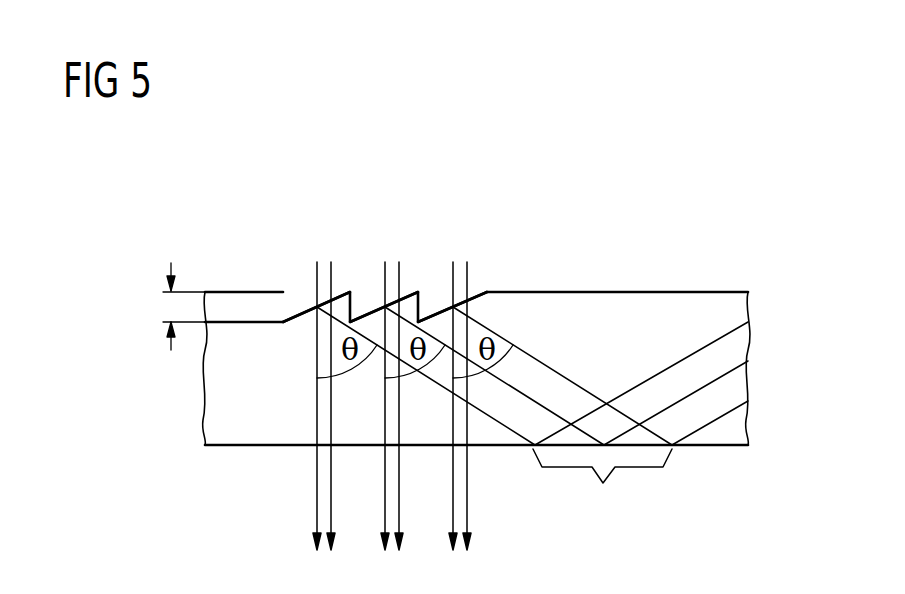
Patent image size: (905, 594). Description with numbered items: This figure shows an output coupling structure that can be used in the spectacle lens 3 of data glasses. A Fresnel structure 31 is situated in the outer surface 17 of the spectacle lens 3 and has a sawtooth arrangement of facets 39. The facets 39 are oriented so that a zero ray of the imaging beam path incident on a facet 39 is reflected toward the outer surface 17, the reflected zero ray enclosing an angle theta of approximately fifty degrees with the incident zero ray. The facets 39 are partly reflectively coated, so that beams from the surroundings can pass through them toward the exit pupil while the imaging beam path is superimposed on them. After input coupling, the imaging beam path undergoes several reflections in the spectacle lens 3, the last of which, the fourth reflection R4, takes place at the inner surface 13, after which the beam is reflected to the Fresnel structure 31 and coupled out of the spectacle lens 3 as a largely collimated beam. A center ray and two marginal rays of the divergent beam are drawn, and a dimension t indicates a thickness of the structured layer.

The spectacle lens 3 is at (647, 310).
The inner surface 13 is at (717, 447).
The outer surface 17 is at (555, 291).
The Fresnel structure 31 is at (323, 207).
The facets 39 is at (302, 306).
The thickness of layer t is at (172, 307).
The fourth reflection R4 is at (602, 485).